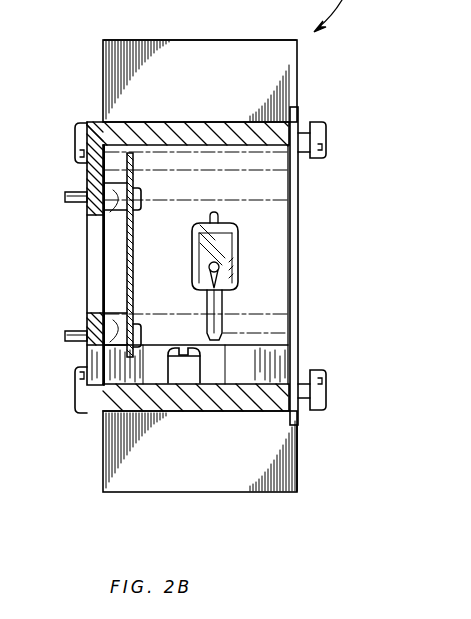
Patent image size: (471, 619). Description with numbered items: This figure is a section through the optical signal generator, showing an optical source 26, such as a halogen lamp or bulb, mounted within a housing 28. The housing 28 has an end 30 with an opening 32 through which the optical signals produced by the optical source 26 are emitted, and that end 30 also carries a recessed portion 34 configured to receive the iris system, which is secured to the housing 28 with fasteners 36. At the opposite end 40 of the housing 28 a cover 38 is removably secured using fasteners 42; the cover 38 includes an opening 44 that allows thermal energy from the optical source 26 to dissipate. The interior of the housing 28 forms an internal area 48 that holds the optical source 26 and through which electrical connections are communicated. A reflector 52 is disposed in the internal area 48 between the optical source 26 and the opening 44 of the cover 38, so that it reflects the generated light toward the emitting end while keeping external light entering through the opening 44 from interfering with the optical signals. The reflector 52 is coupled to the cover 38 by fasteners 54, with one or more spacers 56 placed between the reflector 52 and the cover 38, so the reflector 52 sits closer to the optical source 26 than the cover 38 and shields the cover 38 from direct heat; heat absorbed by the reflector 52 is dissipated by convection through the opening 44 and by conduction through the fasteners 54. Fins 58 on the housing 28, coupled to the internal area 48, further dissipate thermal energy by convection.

The optical source 26 is at (239, 262).
The housing 28 is at (103, 450).
The end 30 is at (298, 448).
The opening 32 is at (300, 268).
The recessed portion 34 is at (298, 420).
The fasteners 36 is at (327, 140).
The cover 38 is at (97, 122).
The end 40 is at (103, 62).
The fasteners 42 is at (75, 140).
The opening 44 is at (96, 270).
The internal area 48 is at (173, 241).
The reflector 52 is at (135, 283).
The fasteners 54 is at (65, 196).
The spacers 56 is at (117, 202).
The fins 58 is at (198, 40).